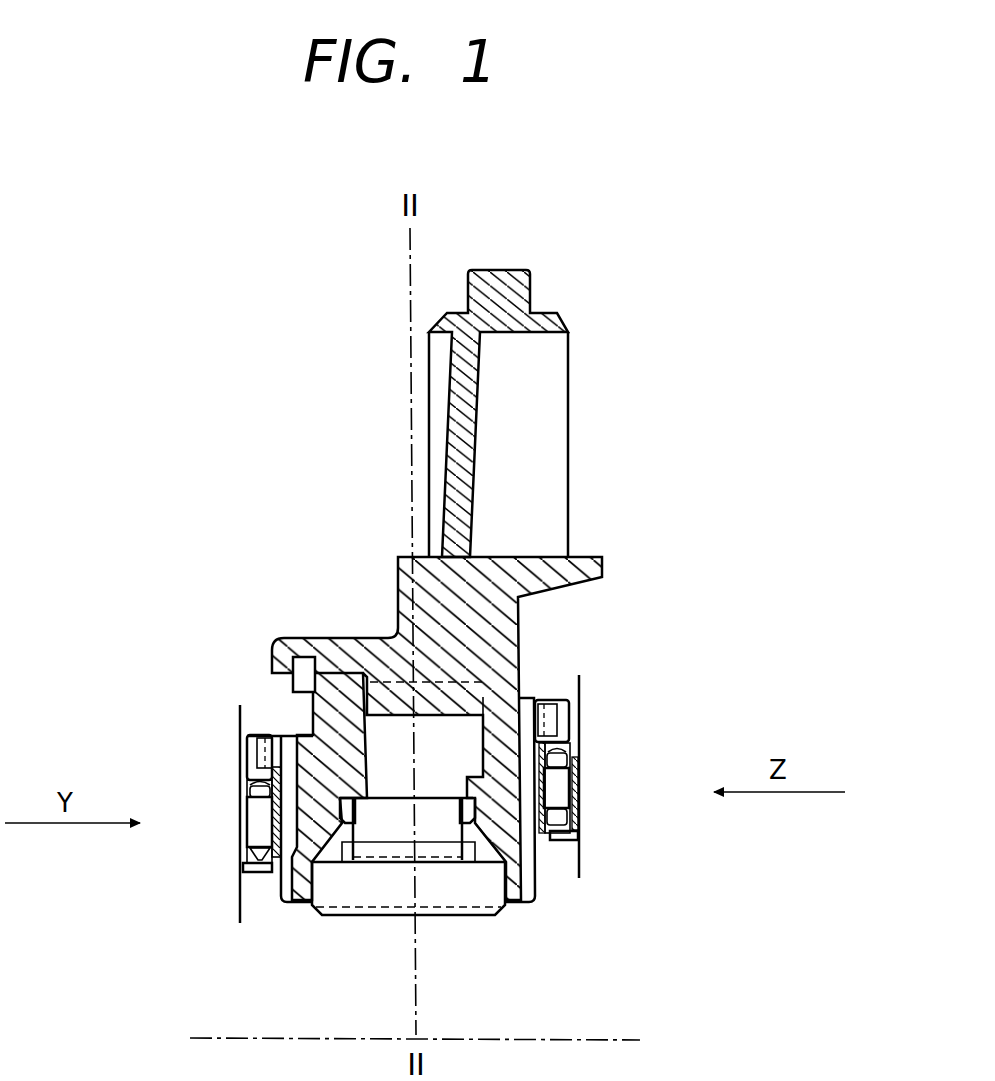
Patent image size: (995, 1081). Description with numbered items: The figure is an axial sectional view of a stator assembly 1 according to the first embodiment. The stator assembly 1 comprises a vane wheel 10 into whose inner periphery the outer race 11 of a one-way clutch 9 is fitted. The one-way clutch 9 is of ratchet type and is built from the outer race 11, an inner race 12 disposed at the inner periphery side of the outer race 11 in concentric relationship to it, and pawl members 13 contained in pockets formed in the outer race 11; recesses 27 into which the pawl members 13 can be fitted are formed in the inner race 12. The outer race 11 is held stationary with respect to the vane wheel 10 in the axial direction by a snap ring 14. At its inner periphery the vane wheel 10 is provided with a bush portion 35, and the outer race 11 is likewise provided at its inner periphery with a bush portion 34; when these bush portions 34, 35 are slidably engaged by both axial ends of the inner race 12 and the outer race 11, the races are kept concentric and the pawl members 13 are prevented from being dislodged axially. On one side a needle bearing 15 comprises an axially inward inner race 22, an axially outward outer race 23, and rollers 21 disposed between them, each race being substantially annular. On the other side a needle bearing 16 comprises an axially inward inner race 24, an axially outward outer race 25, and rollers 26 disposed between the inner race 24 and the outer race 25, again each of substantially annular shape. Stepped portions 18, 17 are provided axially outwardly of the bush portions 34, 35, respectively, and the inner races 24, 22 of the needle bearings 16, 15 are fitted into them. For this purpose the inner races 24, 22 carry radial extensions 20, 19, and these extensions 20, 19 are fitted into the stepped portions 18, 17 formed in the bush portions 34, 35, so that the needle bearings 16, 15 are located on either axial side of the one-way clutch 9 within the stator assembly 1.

The stator assembly 1 is at (602, 288).
The one-way clutch 9 is at (307, 919).
The vane wheel 10 is at (556, 437).
The outer race 11 is at (310, 709).
The inner race 12 is at (347, 902).
The pawl members 13 is at (438, 832).
The snap ring 14 is at (303, 677).
The needle bearing 15 is at (557, 856).
The needle bearing 16 is at (258, 890).
The stepped portion 17 is at (578, 716).
The stepped portion 18 is at (243, 762).
The radial extension 19 is at (555, 712).
The radial extension 20 is at (267, 751).
The rollers 21 is at (573, 768).
The inner race 22 is at (547, 789).
The outer race 23 is at (580, 826).
The inner race 24 is at (262, 818).
The outer race 25 is at (248, 822).
The rollers 26 is at (247, 840).
The recesses 27 is at (393, 858).
The bush portion 34 is at (240, 873).
The bush portion 35 is at (487, 845).